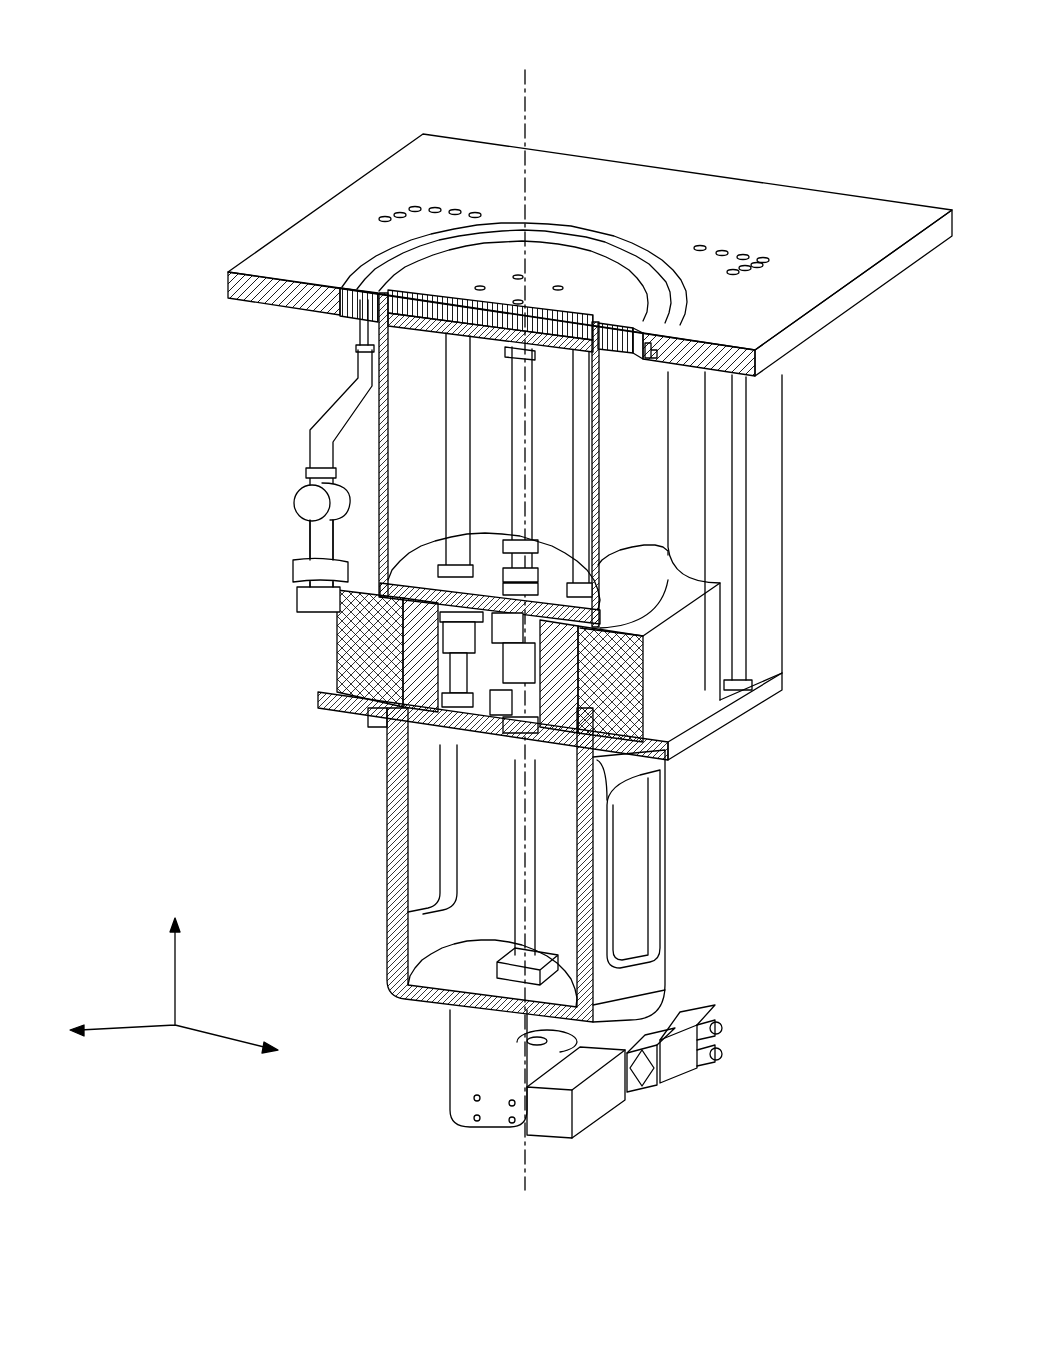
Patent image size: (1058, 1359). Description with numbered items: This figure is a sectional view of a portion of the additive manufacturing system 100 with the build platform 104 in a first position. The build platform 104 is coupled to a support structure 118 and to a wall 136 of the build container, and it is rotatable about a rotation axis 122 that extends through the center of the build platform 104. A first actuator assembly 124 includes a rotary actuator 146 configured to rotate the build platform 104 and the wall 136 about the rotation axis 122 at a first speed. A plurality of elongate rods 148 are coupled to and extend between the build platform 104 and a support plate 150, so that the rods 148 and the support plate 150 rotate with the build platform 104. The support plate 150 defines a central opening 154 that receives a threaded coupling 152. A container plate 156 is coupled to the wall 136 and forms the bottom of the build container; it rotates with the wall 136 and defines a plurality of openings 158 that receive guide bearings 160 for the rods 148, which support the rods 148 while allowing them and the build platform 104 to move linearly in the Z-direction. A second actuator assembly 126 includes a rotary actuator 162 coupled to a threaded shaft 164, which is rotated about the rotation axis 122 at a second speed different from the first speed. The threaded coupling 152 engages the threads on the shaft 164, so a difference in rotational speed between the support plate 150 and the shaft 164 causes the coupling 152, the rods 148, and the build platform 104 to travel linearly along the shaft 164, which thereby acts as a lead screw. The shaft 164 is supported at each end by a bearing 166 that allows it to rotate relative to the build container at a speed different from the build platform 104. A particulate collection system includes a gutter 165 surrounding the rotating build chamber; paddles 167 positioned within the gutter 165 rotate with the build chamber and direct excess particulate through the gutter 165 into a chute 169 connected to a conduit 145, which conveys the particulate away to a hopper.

The additive manufacturing system 100 is at (824, 66).
The build platform 104 is at (440, 280).
The support structure 118 is at (388, 898).
The rotation axis 122 is at (520, 92).
The first actuator assembly 124 is at (678, 688).
The second actuator assembly 126 is at (646, 1095).
The wall 136 is at (645, 520).
The conduit 145 is at (325, 440).
The rotary actuator 146 is at (657, 717).
The elongate rods 148 is at (457, 493).
The support plate 150 is at (490, 712).
The threaded coupling 152 is at (512, 775).
The central opening 154 is at (453, 717).
The container plate 156 is at (330, 535).
The openings 158 is at (540, 625).
The guide bearings 160 is at (460, 637).
The rotary actuator 162 is at (552, 1122).
The threaded shaft 164 is at (545, 853).
The gutter 165 is at (683, 297).
The bearing 166 is at (493, 975).
The paddle 167 is at (345, 318).
The chute 169 is at (355, 340).